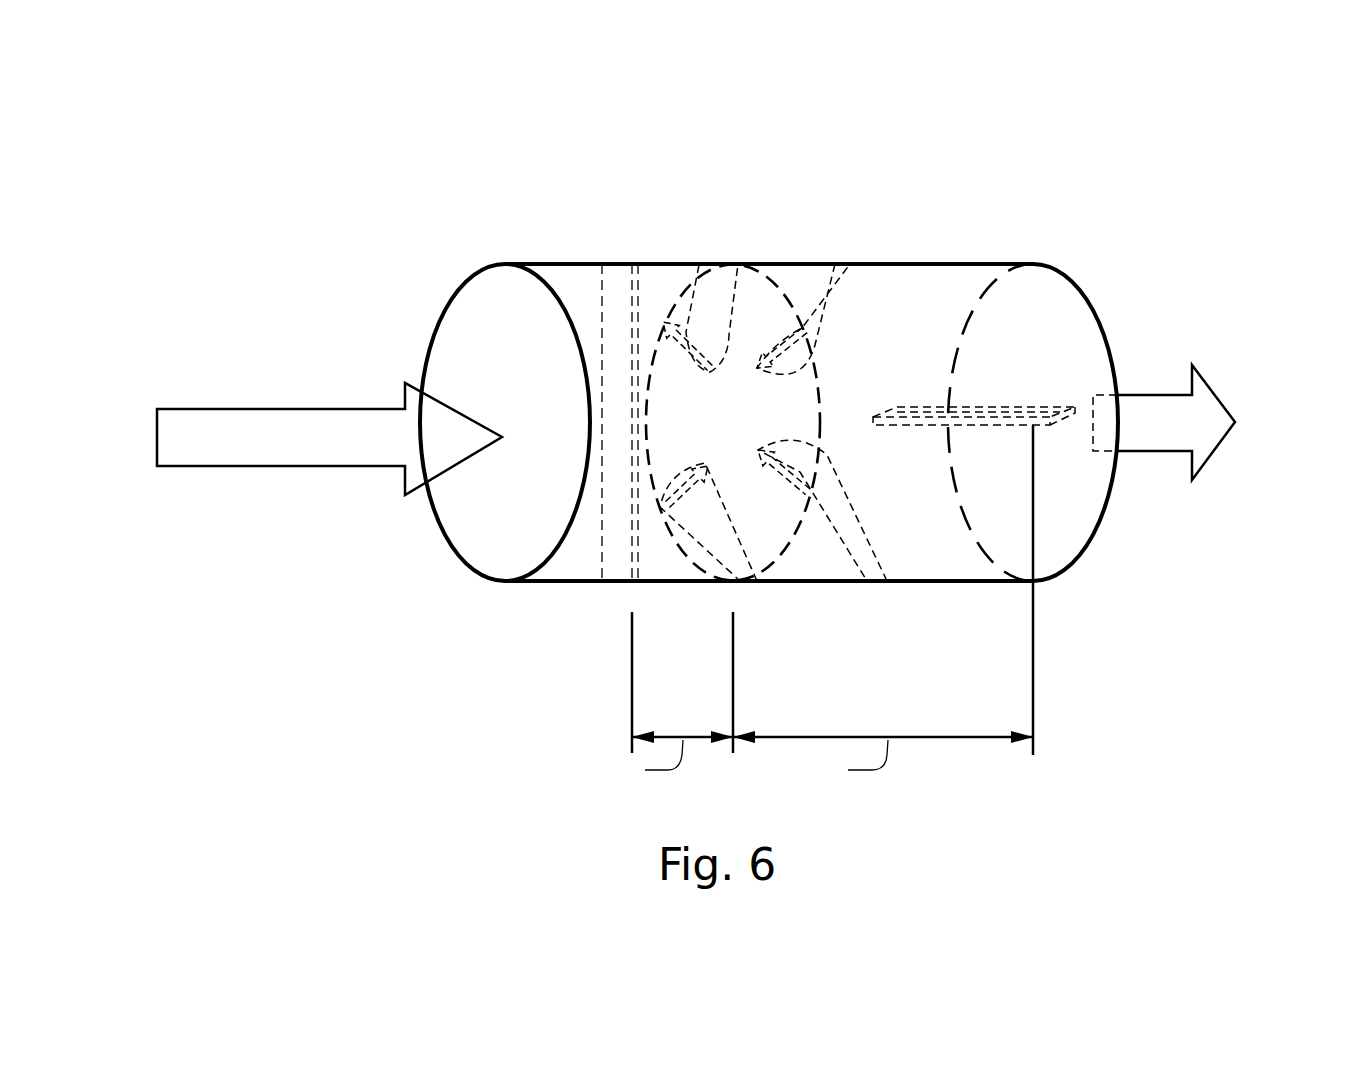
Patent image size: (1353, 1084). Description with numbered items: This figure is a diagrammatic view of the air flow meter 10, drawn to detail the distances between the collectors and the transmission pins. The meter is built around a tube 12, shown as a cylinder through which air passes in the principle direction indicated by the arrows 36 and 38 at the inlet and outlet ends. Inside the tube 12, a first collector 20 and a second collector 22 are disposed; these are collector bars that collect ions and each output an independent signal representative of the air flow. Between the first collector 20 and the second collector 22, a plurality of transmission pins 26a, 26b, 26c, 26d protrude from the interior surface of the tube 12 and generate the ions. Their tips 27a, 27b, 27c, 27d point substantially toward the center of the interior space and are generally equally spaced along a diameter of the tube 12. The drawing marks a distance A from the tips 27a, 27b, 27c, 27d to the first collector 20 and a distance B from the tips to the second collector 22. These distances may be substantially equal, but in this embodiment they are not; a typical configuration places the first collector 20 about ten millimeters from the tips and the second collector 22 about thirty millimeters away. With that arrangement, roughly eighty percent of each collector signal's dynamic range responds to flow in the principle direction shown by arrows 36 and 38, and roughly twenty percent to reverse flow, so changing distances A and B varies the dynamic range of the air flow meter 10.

The air flow meter 10 is at (1135, 195).
The tube 12 is at (963, 258).
The first collector 20 is at (617, 285).
The second collector 22 is at (1040, 405).
The transmission pin 26a is at (699, 265).
The transmission pin 26b is at (757, 581).
The transmission pin 26c is at (835, 264).
The transmission pin 26d is at (887, 581).
The tip 27a is at (738, 264).
The tip 27b is at (740, 581).
The tip 27c is at (850, 264).
The tip 27d is at (867, 581).
The arrow 36 is at (286, 409).
The arrow 38 is at (1218, 400).